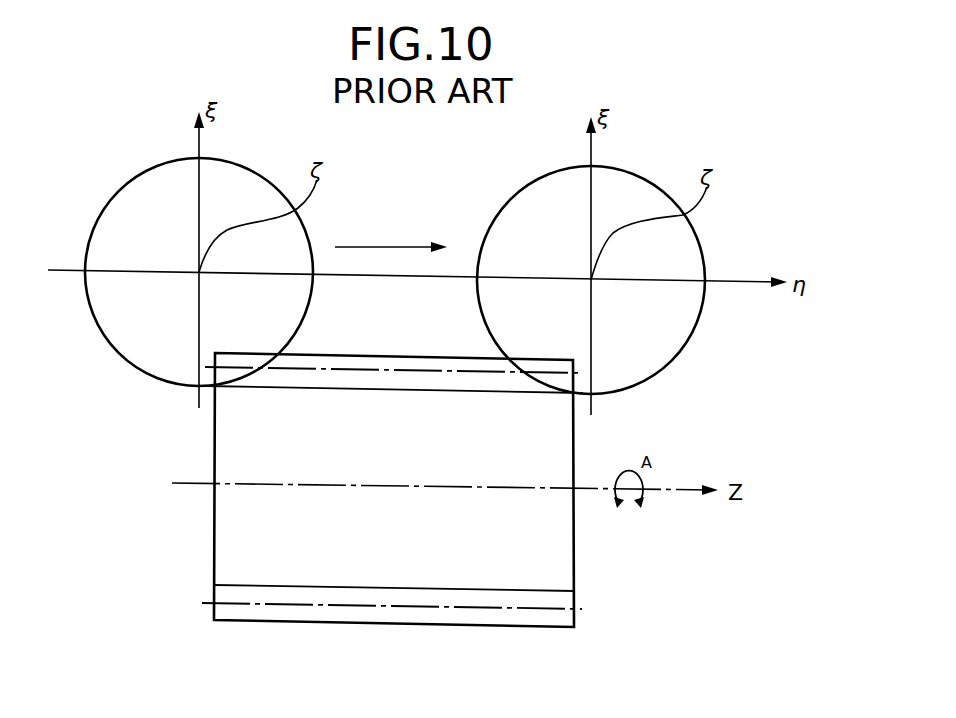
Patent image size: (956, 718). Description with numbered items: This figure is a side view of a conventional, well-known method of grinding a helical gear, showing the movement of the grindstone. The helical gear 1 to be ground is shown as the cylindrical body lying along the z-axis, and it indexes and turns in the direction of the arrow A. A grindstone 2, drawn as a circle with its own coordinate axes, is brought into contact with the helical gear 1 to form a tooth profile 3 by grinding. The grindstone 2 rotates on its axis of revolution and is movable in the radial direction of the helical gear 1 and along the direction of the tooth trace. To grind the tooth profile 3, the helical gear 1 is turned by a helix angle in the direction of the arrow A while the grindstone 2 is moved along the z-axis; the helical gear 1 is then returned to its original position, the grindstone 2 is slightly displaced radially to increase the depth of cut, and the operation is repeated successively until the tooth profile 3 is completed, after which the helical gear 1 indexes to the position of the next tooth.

The helical gear 1 is at (240, 515).
The grindstone 2 is at (663, 328).
The tooth profile 3 is at (375, 363).